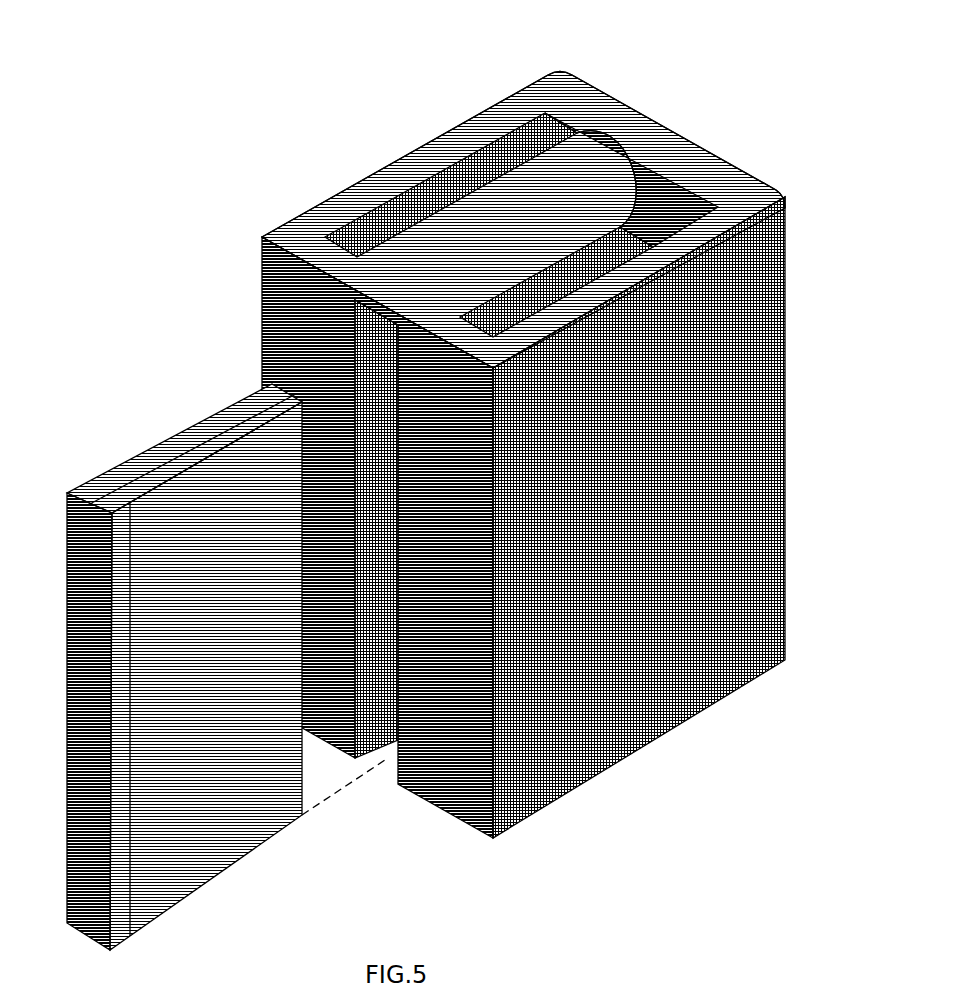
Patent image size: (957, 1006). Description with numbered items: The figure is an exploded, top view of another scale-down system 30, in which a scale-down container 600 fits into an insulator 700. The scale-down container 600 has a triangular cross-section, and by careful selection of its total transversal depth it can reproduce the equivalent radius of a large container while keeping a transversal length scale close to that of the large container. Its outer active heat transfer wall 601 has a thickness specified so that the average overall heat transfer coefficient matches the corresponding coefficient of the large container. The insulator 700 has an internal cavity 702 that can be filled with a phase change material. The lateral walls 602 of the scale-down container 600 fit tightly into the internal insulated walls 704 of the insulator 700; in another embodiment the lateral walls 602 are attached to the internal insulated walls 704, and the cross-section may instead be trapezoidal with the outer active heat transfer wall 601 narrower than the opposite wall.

The scale-down system 30 is at (193, 88).
The scale-down container 600 is at (169, 651).
The outer active heat transfer wall 601 is at (87, 490).
The lateral walls 602 is at (177, 853).
The insulator 700 is at (523, 448).
The internal cavity 702 is at (698, 147).
The internal insulated walls 704 is at (376, 748).